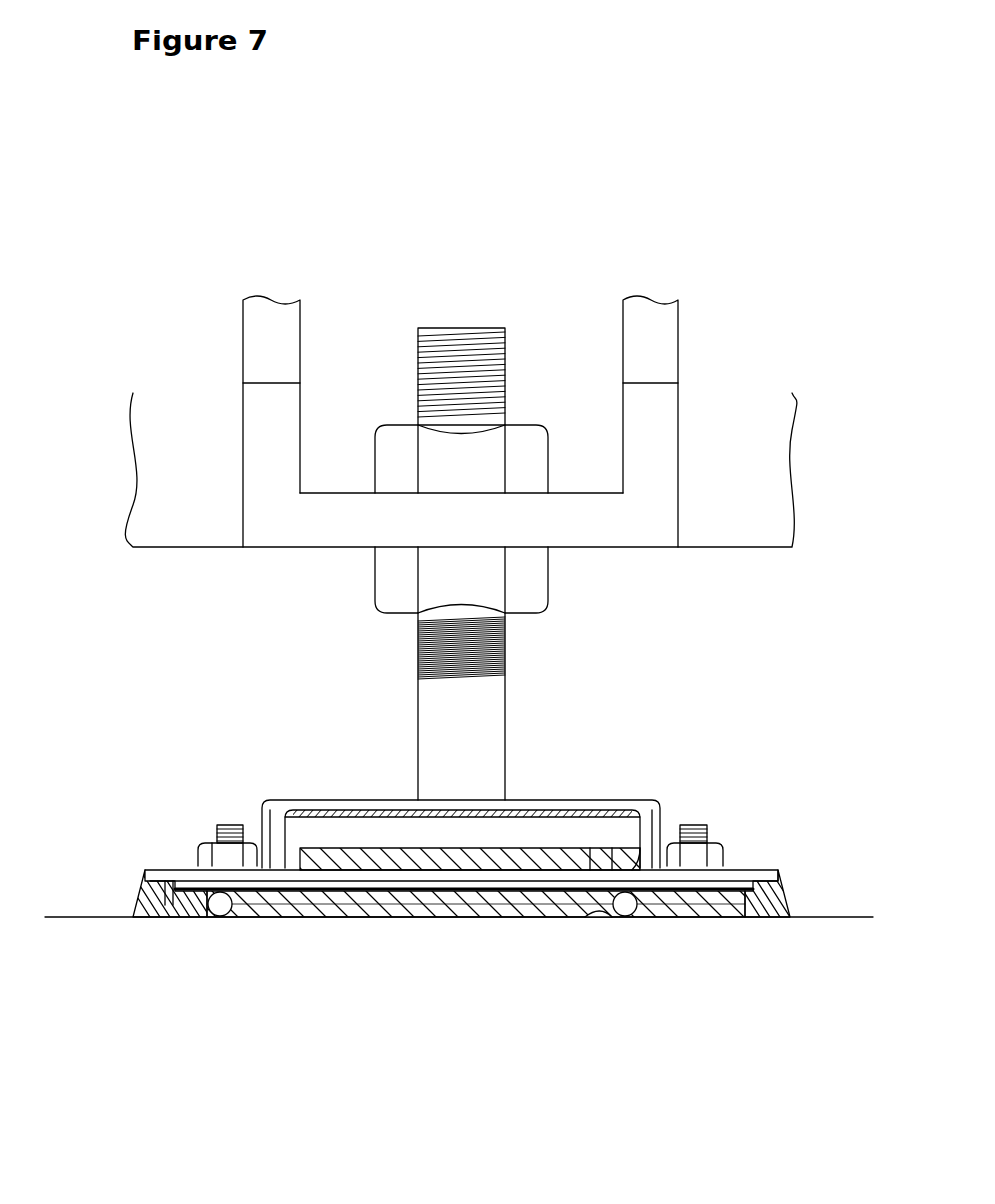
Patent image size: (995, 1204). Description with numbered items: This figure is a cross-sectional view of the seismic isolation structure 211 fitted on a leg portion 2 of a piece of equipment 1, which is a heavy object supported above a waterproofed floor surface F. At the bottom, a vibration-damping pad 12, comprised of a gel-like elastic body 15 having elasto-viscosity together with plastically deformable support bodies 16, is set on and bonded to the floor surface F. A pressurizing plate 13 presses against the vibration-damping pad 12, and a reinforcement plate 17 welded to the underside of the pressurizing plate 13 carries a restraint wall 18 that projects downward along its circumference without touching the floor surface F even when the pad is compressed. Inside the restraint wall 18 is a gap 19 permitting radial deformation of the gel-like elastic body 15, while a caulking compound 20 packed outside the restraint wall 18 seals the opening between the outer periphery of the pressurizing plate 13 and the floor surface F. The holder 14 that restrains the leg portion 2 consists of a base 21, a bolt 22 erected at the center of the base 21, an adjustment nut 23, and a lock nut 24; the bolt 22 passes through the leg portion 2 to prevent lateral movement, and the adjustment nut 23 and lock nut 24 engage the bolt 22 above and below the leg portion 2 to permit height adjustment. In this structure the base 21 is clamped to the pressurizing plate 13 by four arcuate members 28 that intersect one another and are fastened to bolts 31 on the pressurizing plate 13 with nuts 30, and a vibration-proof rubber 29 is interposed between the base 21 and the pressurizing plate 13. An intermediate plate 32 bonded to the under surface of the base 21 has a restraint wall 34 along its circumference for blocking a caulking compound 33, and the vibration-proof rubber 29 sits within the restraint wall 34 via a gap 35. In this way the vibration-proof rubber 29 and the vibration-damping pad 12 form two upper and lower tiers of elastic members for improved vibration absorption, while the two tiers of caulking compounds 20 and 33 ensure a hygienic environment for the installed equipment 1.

The equipment 1 is at (185, 550).
The leg portion 2 is at (243, 318).
The vibration-damping pad 12 is at (450, 917).
The pressurizing plate 13 is at (743, 870).
The holder 14 is at (505, 662).
The gel-like elastic body 15 is at (515, 905).
The support body 16 is at (410, 917).
The reinforcement plate 17 is at (748, 917).
The restraint wall 18 is at (175, 916).
The gap 19 is at (200, 912).
The caulking compound 20 is at (140, 898).
The base 21 is at (377, 818).
The bolt 22 is at (447, 328).
The adjustment nut 23 is at (375, 582).
The lock nut 24 is at (537, 438).
The arcuate member 28 is at (305, 803).
The vibration-proof rubber 29 is at (555, 848).
The nut 30 is at (210, 848).
The bolt 31 is at (228, 823).
The intermediate plate 32 is at (608, 848).
The caulking compound 33 is at (315, 890).
The restraint wall 34 is at (598, 905).
The gap 35 is at (650, 848).
The seismic isolation structure 211 is at (672, 698).
The floor surface F is at (843, 917).